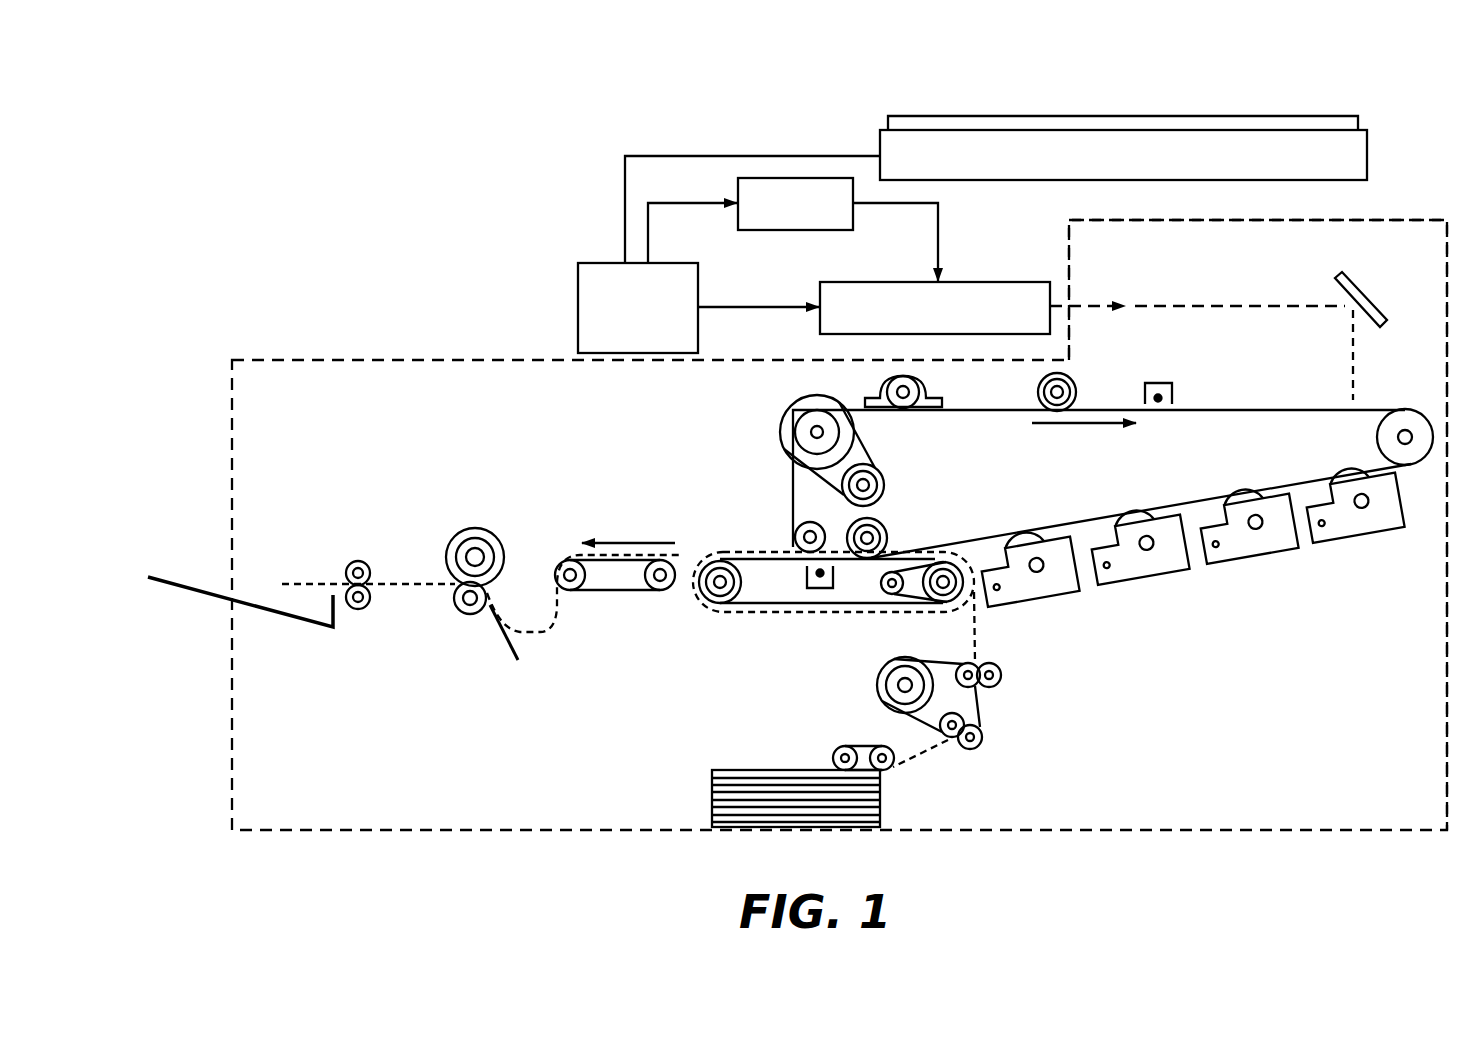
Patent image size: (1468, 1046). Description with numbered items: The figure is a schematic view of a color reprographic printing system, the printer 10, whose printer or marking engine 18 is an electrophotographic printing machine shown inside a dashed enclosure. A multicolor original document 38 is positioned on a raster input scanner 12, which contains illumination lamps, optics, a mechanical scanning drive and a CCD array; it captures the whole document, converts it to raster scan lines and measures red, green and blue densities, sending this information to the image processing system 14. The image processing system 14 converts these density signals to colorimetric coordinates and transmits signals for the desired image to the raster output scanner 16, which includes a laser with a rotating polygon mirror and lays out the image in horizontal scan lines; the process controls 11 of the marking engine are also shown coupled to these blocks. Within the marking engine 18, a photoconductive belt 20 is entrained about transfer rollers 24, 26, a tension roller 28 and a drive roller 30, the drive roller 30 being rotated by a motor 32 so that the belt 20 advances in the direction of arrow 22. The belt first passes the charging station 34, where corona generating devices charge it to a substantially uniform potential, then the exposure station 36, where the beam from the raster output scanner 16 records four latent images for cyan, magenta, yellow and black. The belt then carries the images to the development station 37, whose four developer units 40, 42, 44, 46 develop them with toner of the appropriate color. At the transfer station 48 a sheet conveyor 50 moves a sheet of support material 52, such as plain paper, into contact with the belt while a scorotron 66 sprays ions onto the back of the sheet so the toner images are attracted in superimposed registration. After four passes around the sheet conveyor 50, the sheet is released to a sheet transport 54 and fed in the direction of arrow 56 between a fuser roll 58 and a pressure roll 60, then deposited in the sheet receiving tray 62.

The printer 10 is at (1064, 105).
The process controls 11 is at (828, 232).
The raster input scanner 12 is at (872, 128).
The image processing system 14 is at (705, 292).
The raster output scanner 16 is at (1028, 272).
The marking engine 18 is at (1385, 220).
The photoconductive belt 20 is at (1258, 409).
The arrow 22 is at (1066, 427).
The transfer roller 24 is at (794, 546).
The transfer roller 26 is at (888, 530).
The tension roller 28 is at (1378, 433).
The drive roller 30 is at (792, 422).
The motor 32 is at (887, 472).
The charging station 34 is at (1180, 399).
The exposure station 36 is at (1342, 400).
The development station 37 is at (1190, 599).
The original document 38 is at (1272, 122).
The developer unit 40 is at (1358, 530).
The developer unit 42 is at (1250, 552).
The developer unit 44 is at (1142, 572).
The developer unit 46 is at (1043, 589).
The transfer station 48 is at (788, 619).
The sheet conveyor 50 is at (767, 613).
The sheet of support material 52 is at (745, 770).
The sheet transport 54 is at (618, 592).
The arrow 56 is at (632, 540).
The fuser roll 58 is at (473, 528).
The pressure roll 60 is at (455, 614).
The sheet receiving tray 62 is at (303, 623).
The scorotron 66 is at (803, 578).